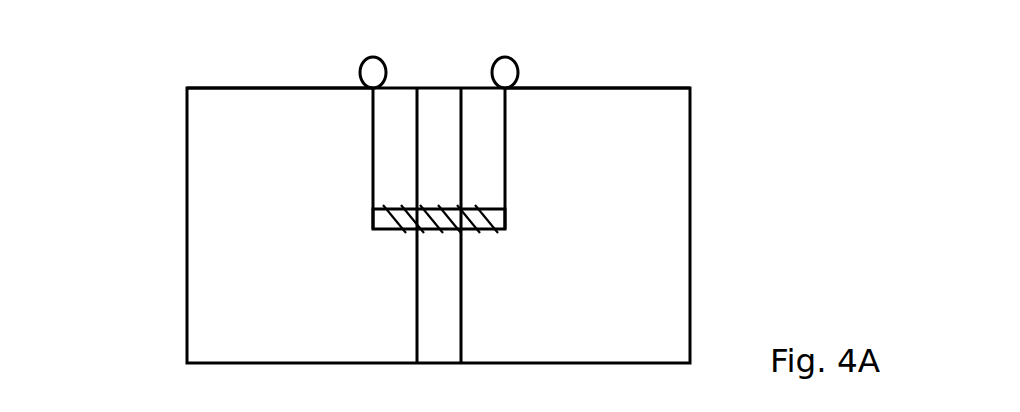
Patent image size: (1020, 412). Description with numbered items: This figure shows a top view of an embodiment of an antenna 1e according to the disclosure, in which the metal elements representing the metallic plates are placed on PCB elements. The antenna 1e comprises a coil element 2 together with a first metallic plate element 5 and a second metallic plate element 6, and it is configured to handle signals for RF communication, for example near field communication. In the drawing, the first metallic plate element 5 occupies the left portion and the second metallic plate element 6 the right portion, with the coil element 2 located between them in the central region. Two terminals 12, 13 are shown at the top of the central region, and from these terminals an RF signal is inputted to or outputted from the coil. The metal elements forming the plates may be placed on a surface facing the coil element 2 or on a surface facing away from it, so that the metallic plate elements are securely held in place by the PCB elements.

The antenna 1e is at (100, 86).
The coil element 2 is at (520, 243).
The first metallic plate element 5 is at (233, 98).
The second metallic plate element 6 is at (642, 105).
The terminal 12 is at (383, 60).
The terminal 13 is at (516, 62).